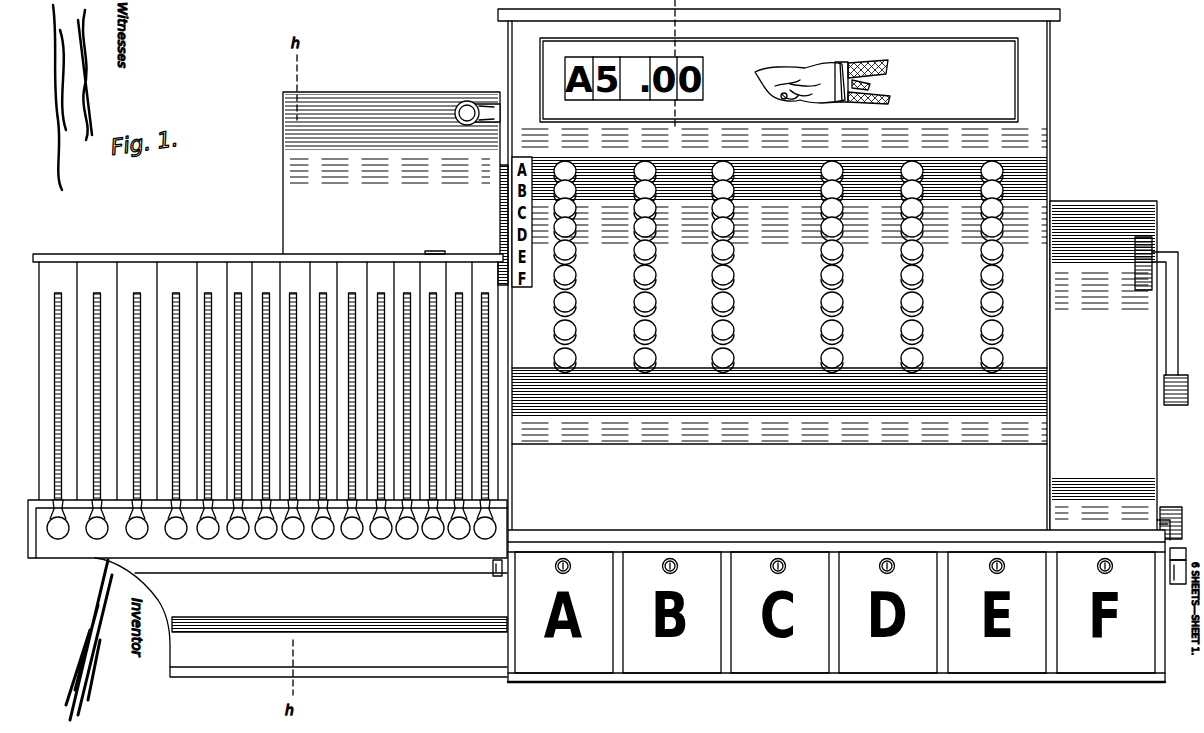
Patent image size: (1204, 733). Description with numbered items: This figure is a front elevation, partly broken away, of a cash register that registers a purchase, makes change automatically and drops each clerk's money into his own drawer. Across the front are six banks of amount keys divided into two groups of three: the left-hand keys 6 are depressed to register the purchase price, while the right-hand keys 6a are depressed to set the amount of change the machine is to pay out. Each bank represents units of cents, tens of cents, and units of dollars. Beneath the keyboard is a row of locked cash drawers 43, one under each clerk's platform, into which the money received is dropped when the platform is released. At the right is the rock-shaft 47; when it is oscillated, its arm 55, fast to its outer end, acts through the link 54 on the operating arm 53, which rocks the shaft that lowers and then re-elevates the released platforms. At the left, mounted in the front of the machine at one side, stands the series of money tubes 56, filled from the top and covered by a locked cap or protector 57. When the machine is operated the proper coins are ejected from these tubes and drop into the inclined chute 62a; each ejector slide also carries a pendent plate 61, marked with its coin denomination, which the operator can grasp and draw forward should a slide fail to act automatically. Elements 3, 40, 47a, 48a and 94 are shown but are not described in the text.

The drawer casing 3 is at (1007, 640).
The amount keys of the left-hand group 6 is at (632, 275).
The amount keys of the right-hand group 6a is at (900, 275).
The knob 40 is at (467, 100).
The cash drawer 43 is at (672, 660).
The rock-shaft 47 is at (1176, 350).
The crank bracket 47a is at (1098, 265).
The indicator bar 48a is at (500, 229).
The operating arm 53 is at (1178, 578).
The link 54 is at (1175, 557).
The arm 55 is at (1183, 536).
The money tubes 56 is at (70, 272).
The locked cap or protector 57 is at (197, 262).
The pendent plate 61 is at (323, 540).
The inclined chute 62a is at (358, 624).
The catch 94 is at (492, 573).